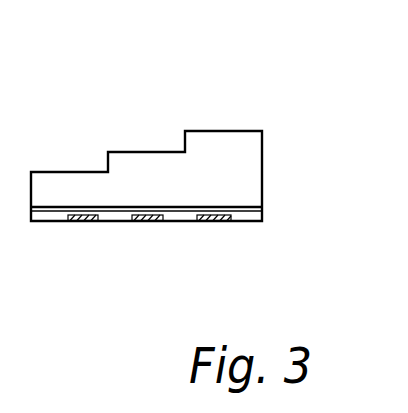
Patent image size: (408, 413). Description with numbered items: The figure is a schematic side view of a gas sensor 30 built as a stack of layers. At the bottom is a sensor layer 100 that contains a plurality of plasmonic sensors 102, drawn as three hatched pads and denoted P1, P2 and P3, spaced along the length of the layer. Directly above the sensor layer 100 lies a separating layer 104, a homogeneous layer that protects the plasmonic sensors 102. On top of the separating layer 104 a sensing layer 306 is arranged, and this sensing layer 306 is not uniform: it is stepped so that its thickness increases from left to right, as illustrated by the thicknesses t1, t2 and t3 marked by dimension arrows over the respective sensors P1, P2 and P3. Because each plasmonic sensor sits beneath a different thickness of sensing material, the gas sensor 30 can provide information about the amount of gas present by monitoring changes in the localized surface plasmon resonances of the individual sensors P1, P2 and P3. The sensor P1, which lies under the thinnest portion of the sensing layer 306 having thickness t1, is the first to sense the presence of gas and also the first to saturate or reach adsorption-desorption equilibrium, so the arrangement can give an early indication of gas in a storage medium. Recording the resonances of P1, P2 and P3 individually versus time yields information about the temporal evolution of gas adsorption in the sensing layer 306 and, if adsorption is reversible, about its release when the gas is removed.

The gas sensor 30 is at (68, 84).
The sensing layer 306 is at (261, 148).
The separating layer 104 is at (262, 211).
The sensor layer 100 is at (262, 218).
The plasmonic sensors 102 is at (232, 221).
The first plasmonic sensor P1 is at (82, 221).
The second plasmonic sensor P2 is at (148, 221).
The third plasmonic sensor P3 is at (223, 221).
The first thickness t1 is at (68, 175).
The second thickness t2 is at (147, 155).
The third thickness t3 is at (217, 204).